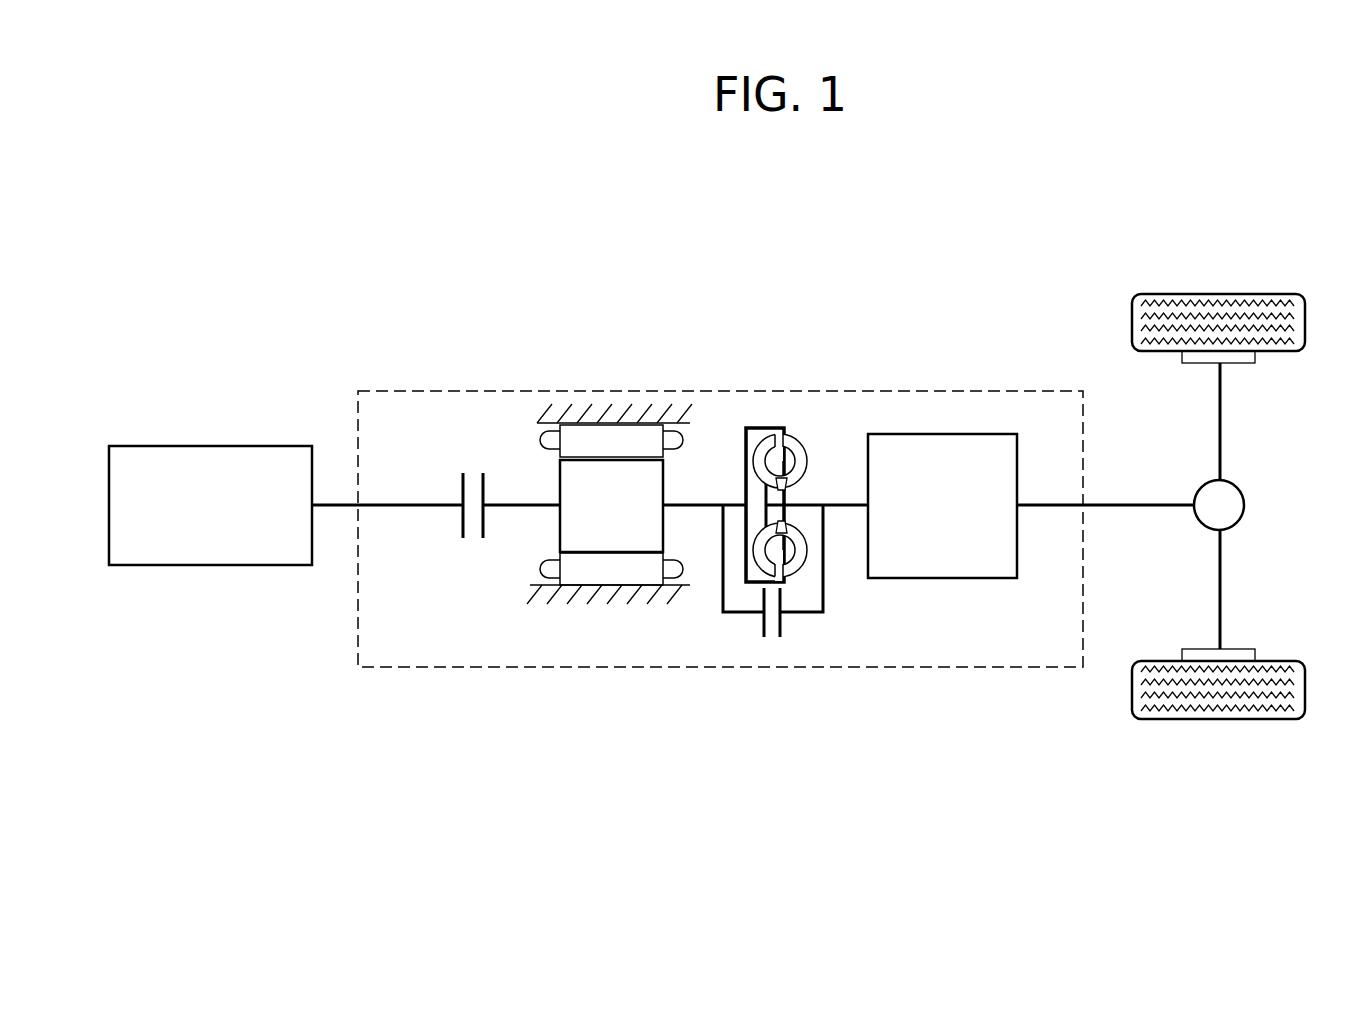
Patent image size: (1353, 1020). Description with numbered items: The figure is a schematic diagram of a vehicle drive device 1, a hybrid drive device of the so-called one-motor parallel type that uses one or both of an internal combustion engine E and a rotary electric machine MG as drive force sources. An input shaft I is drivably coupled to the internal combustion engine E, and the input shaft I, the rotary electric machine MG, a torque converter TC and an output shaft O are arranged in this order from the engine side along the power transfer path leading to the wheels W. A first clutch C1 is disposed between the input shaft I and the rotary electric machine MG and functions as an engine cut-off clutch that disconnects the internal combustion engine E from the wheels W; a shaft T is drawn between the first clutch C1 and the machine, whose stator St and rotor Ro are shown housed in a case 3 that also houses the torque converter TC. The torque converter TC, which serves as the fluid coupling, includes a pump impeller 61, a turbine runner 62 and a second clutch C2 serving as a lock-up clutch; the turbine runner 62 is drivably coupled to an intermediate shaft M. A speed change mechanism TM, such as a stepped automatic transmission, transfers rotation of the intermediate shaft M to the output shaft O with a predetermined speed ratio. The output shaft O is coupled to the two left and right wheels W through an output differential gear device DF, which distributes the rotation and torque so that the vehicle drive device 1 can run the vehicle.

The vehicle drive device 1 is at (432, 390).
The internal combustion engine E is at (205, 446).
The input shaft I is at (383, 502).
The first clutch C1 is at (460, 535).
The intermediate shaft T is at (537, 500).
The rotary electric machine MG is at (577, 437).
The stator St is at (572, 440).
The rotor Ro is at (567, 523).
The case 3 is at (580, 415).
The torque converter TC is at (792, 467).
The turbine runner 62 is at (760, 466).
The pump impeller 61 is at (805, 558).
The second clutch C2 is at (786, 630).
The intermediate shaft M is at (835, 503).
The speed change mechanism TM is at (938, 434).
The output shaft O is at (1103, 500).
The output differential gear device DF is at (1205, 495).
The wheels W is at (1208, 300).